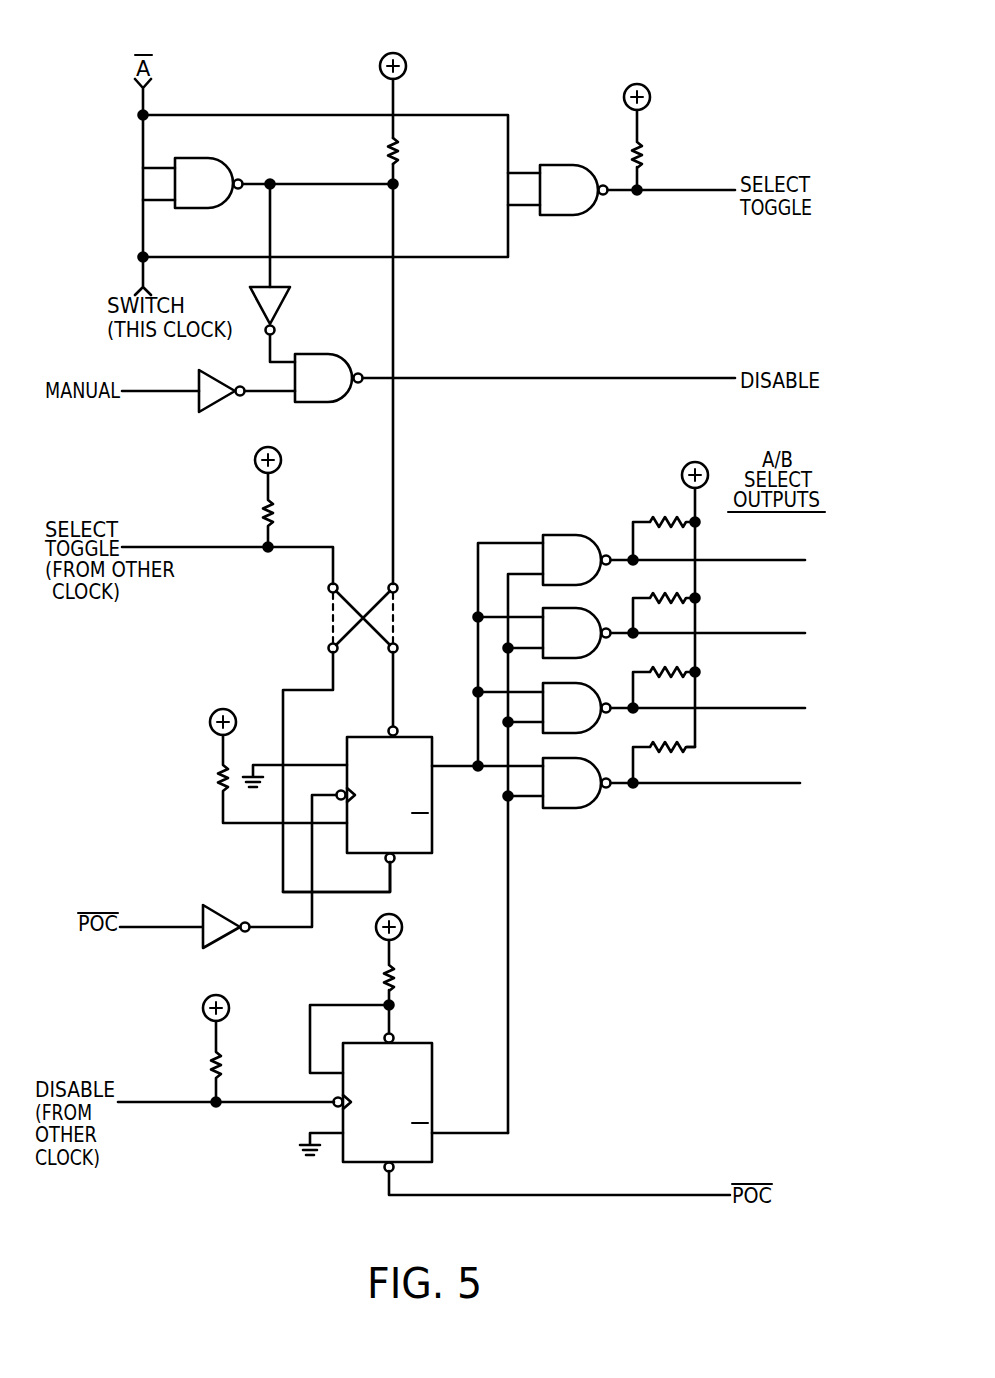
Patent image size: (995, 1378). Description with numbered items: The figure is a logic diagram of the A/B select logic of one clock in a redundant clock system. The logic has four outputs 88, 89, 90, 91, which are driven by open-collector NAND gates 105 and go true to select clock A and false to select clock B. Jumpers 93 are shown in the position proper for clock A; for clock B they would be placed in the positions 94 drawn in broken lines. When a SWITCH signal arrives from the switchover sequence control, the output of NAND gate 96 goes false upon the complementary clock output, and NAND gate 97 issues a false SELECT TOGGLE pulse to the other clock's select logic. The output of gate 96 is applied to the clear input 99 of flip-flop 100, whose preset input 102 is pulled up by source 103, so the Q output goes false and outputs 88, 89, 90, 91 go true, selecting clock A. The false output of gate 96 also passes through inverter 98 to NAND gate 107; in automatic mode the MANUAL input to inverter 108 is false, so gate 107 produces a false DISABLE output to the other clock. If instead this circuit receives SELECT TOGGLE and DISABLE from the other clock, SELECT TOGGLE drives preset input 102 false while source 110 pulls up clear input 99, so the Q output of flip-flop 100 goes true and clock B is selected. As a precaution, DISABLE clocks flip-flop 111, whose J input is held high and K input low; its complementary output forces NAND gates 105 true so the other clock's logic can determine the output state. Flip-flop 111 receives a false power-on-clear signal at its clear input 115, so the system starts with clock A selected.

The output 88 is at (770, 560).
The output 89 is at (770, 633).
The output 90 is at (770, 708).
The output 91 is at (770, 783).
The jumpers 93 is at (362, 600).
The jumper positions 94 is at (333, 624).
The NAND gate 96 is at (225, 162).
The NAND gate 97 is at (567, 165).
The inverter 98 is at (280, 306).
The clear input 99 is at (392, 876).
The flip-flop 100 is at (436, 826).
The preset input 102 is at (393, 718).
The source 103 is at (281, 460).
The NAND gates 105 is at (590, 535).
The NAND gate 107 is at (330, 354).
The inverter 108 is at (214, 403).
The source 110 is at (406, 66).
The flip-flop 111 is at (400, 1043).
The clear input 115 is at (388, 1180).